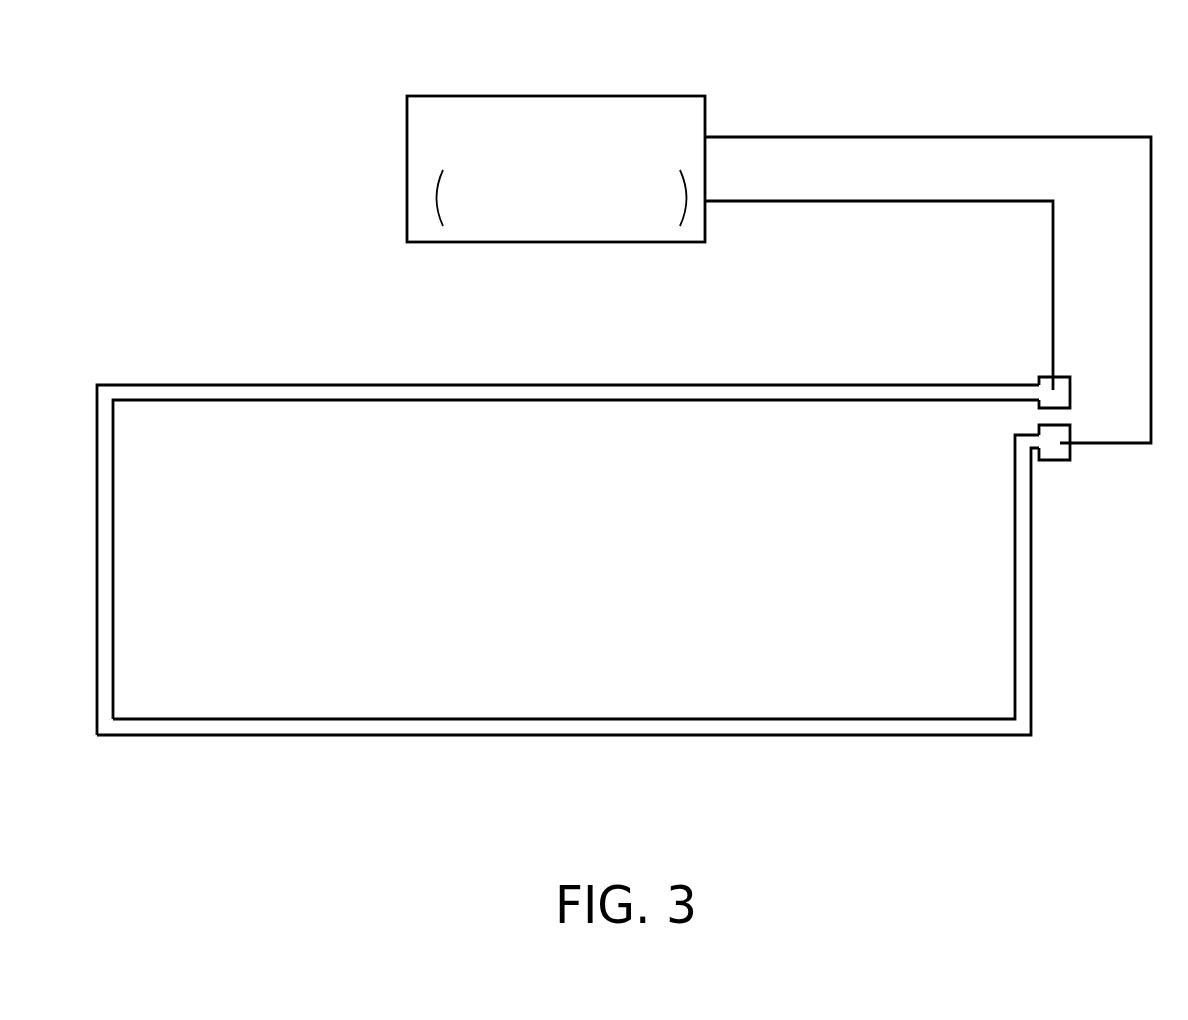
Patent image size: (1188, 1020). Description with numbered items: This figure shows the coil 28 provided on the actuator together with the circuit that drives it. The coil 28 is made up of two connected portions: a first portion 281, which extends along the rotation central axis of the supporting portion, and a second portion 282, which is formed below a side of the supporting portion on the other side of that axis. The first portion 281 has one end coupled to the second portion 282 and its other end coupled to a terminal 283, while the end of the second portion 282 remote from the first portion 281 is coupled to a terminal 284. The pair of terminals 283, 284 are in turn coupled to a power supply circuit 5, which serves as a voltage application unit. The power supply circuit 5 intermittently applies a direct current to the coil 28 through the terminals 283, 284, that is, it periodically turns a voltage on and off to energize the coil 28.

The power supply circuit 5 is at (667, 96).
The coil 28 is at (568, 554).
The first portion 281 is at (449, 393).
The second portion 282 is at (490, 727).
The terminal 283 is at (1062, 380).
The terminal 284 is at (1055, 456).